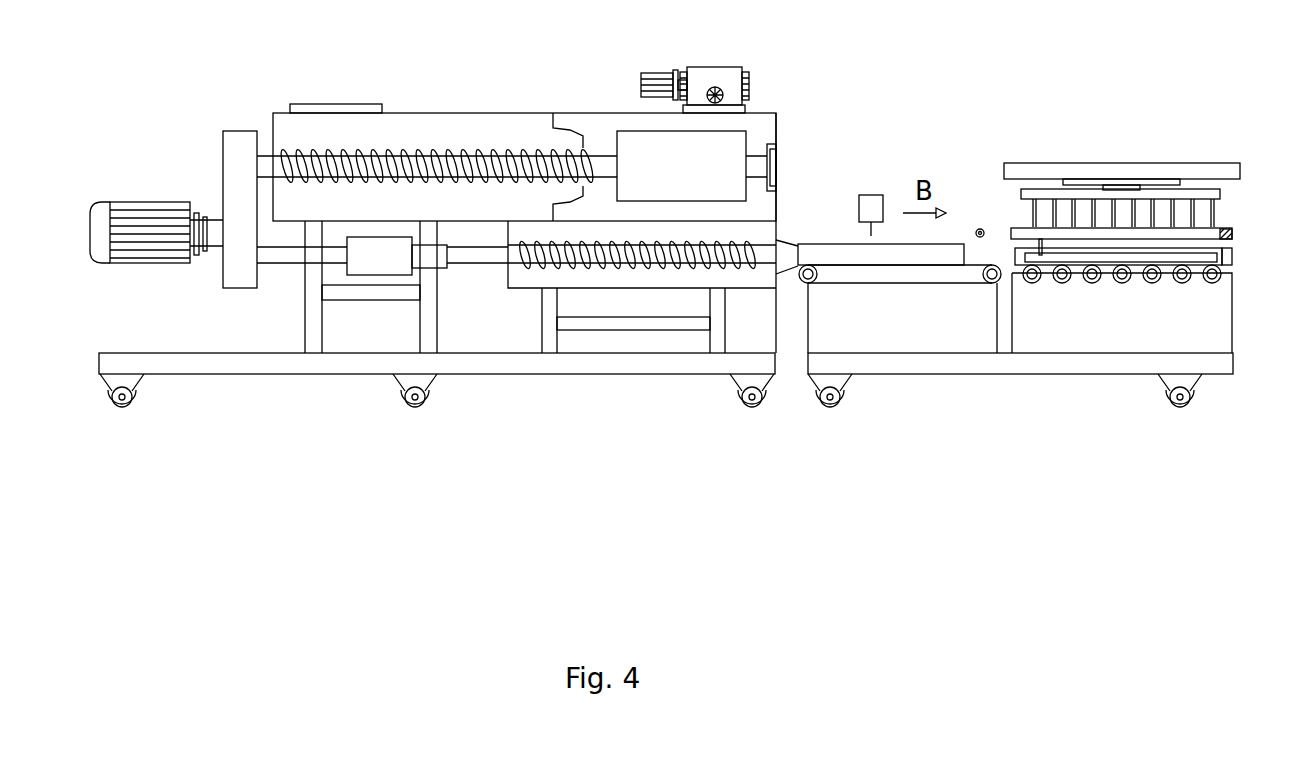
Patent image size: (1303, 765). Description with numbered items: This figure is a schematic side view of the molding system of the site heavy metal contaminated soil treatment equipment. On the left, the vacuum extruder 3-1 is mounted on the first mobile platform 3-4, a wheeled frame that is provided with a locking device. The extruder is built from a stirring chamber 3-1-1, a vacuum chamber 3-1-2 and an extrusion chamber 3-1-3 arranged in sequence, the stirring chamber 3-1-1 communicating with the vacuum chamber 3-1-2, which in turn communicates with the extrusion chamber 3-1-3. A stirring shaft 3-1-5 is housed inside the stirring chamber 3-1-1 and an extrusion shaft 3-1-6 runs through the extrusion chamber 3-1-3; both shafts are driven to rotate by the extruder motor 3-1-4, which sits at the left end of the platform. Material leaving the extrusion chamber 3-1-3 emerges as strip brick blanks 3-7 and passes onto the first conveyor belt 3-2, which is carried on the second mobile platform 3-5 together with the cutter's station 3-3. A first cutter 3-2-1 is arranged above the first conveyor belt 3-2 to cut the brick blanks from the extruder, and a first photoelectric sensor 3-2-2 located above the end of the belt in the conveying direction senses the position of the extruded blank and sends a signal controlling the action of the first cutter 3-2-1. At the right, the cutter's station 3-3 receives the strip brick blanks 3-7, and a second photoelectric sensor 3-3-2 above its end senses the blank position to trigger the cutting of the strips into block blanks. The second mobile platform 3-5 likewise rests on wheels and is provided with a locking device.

The vacuum extruder 3-1 is at (475, 103).
The stirring chamber 3-1-1 is at (425, 140).
The vacuum chamber 3-1-2 is at (597, 142).
The extrusion chamber 3-1-3 is at (682, 278).
The extruder motor 3-1-4 is at (165, 207).
The stirring shaft 3-1-5 is at (345, 160).
The extrusion shaft 3-1-6 is at (607, 259).
The first conveyor belt 3-2 is at (950, 288).
The first cutter 3-2-1 is at (868, 193).
The first photoelectric sensor 3-2-2 is at (978, 229).
The cutter's station 3-3 is at (1168, 279).
The second photoelectric sensor 3-3-2 is at (1224, 240).
The first mobile platform 3-4 is at (364, 362).
The second mobile platform 3-5 is at (1035, 357).
The strip brick blanks 3-7 is at (855, 263).